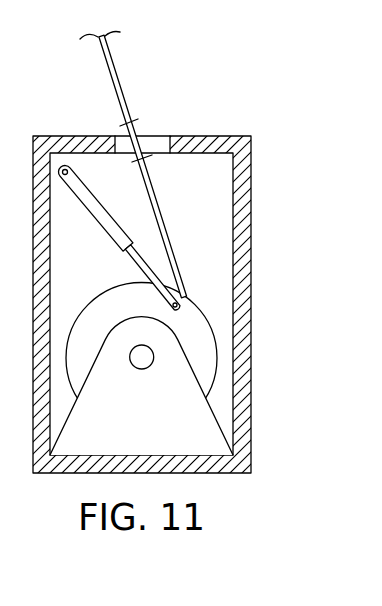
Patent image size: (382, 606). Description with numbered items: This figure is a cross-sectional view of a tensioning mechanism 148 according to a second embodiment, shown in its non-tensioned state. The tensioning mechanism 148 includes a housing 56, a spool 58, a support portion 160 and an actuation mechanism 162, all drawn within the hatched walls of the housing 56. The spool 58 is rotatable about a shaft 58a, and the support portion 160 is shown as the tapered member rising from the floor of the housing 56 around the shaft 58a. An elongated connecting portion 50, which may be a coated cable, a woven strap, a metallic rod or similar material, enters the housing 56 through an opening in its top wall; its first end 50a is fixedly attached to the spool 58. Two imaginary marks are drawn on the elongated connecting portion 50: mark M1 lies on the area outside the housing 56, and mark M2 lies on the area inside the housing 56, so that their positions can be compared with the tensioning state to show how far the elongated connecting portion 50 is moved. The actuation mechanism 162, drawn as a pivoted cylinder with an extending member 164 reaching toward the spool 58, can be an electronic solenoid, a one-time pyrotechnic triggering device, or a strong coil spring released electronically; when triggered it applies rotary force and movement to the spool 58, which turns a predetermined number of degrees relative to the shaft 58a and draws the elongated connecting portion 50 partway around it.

The elongated connecting portion 50 is at (120, 76).
The first end of the elongated connecting portion 50a is at (172, 248).
The housing 56 is at (205, 136).
The spool 58 is at (213, 334).
The shaft 58a is at (138, 359).
The tensioning mechanism 148 is at (265, 173).
The support portion 160 is at (172, 428).
The actuation mechanism 162 is at (83, 208).
The actuator piston rod 164 is at (135, 267).
The imaginary mark M1 is at (120, 124).
The imaginary mark M2 is at (151, 160).